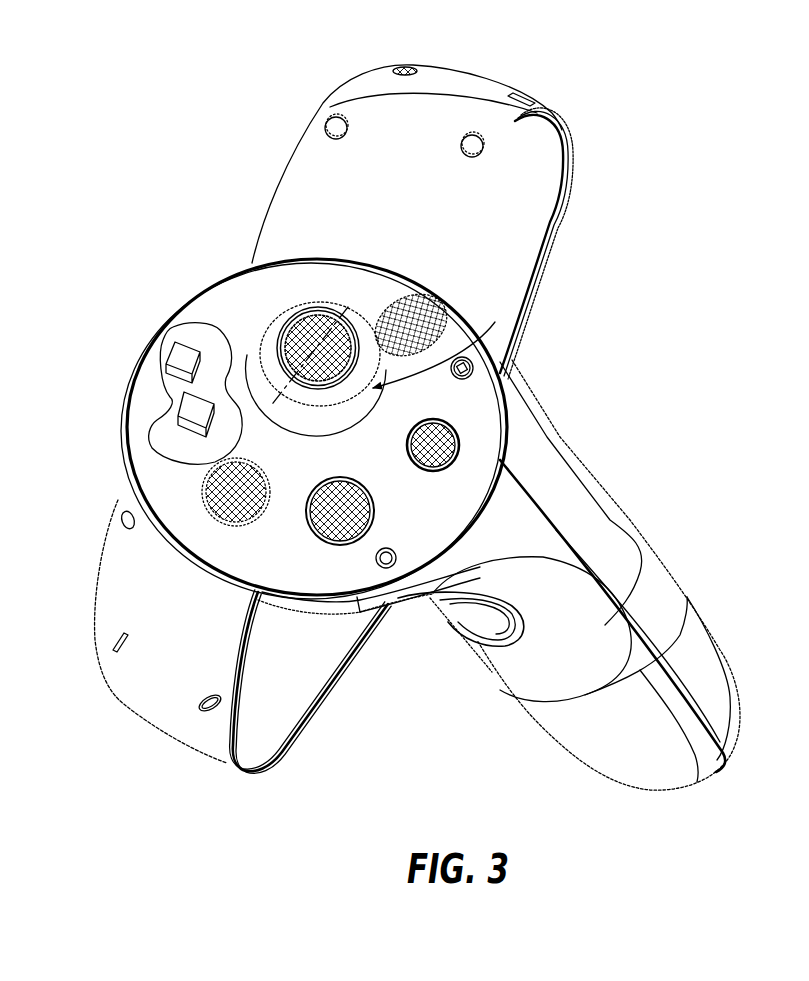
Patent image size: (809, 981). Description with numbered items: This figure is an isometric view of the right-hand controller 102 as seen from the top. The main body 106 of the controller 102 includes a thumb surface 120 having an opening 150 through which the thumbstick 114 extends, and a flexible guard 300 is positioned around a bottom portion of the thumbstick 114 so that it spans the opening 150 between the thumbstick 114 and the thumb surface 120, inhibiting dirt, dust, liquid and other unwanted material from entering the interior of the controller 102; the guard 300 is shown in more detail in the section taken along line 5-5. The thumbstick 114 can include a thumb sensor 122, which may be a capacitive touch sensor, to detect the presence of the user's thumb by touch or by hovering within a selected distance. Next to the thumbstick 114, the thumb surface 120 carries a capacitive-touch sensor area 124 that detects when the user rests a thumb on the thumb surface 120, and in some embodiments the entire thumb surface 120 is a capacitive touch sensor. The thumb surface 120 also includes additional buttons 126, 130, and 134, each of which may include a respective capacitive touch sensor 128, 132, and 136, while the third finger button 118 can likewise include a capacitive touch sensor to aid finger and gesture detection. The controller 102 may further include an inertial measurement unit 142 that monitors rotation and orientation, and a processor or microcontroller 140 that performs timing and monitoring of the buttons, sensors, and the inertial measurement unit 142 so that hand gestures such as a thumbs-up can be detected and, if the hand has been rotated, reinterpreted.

The right-hand controller 102 is at (611, 144).
The main body 106 is at (138, 331).
The thumbstick 114 is at (283, 317).
The third finger button 118 is at (472, 620).
The thumb surface 120 is at (463, 407).
The thumb sensor 122 is at (316, 346).
The capacitive-touch sensor area 124 is at (412, 325).
The button 126 is at (205, 518).
The capacitive touch sensor 128 is at (337, 500).
The button 130 is at (227, 503).
The capacitive touch sensor 132 is at (372, 516).
The button 134 is at (460, 432).
The capacitive touch sensor 136 is at (447, 453).
The processor or microcontroller 140 is at (180, 413).
The inertial measurement unit (IMU) 142 is at (170, 360).
The opening 150 is at (440, 343).
The flexible guard 300 is at (255, 365).
The section line 5- 5 is at (378, 313).